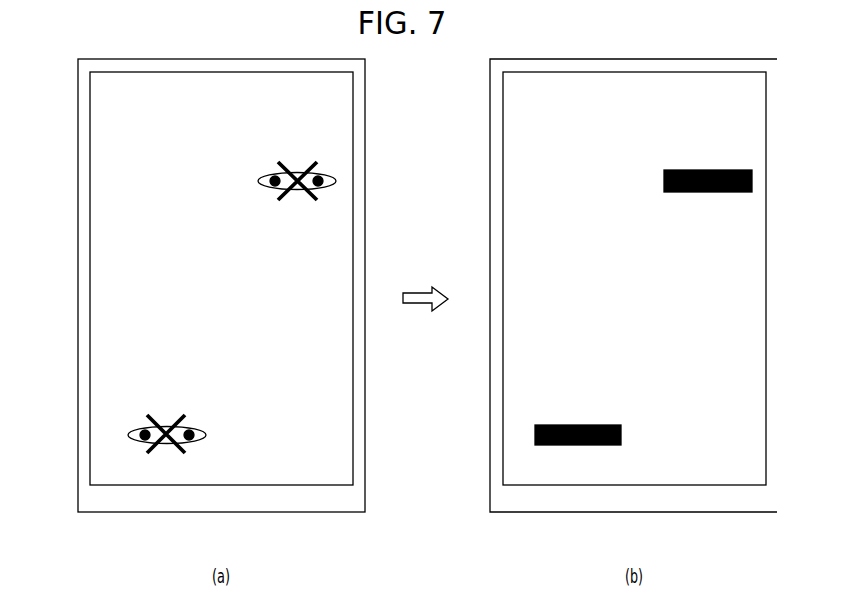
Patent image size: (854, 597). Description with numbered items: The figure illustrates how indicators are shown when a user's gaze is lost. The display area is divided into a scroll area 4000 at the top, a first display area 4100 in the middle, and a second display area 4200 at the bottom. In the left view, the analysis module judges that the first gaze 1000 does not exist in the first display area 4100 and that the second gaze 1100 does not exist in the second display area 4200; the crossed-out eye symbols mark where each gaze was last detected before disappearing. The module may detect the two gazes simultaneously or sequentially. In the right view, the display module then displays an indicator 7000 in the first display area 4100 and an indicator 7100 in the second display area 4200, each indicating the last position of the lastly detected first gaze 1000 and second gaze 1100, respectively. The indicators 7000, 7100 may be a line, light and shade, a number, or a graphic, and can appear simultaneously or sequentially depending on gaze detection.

The scroll area 4000 is at (78, 72).
The first display area 4100 is at (78, 120).
The second display area 4200 is at (78, 390).
The first gaze 1000 is at (326, 173).
The second gaze 1100 is at (143, 447).
The indicator 7000 is at (740, 170).
The indicator 7100 is at (565, 447).